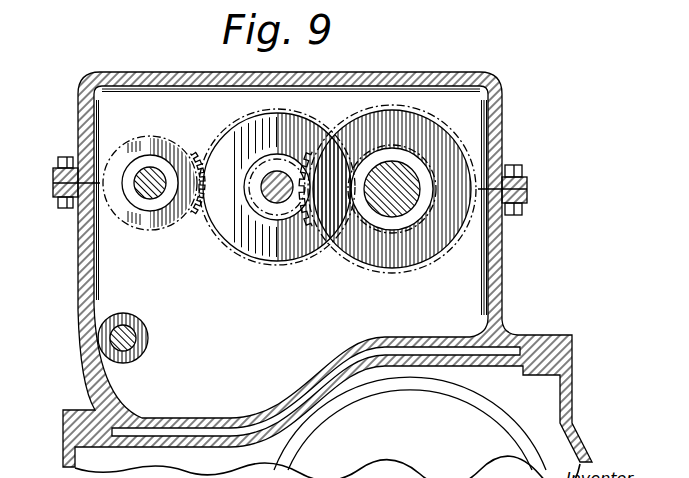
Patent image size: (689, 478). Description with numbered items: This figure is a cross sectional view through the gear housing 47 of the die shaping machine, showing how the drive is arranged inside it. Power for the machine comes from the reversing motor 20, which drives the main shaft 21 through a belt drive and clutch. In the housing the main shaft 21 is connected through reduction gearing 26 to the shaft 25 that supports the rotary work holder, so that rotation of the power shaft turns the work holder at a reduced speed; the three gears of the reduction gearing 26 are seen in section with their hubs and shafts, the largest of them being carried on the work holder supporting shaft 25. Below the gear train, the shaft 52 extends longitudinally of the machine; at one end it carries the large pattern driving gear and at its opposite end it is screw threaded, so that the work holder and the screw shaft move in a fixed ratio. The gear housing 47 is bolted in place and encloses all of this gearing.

The reversing motor 20 is at (410, 423).
The main shaft 21 is at (157, 172).
The work holder supporting shaft 25 is at (412, 214).
The reduction gearing 26 is at (167, 232).
The gear housing 47 is at (467, 273).
The shaft 52 is at (146, 340).